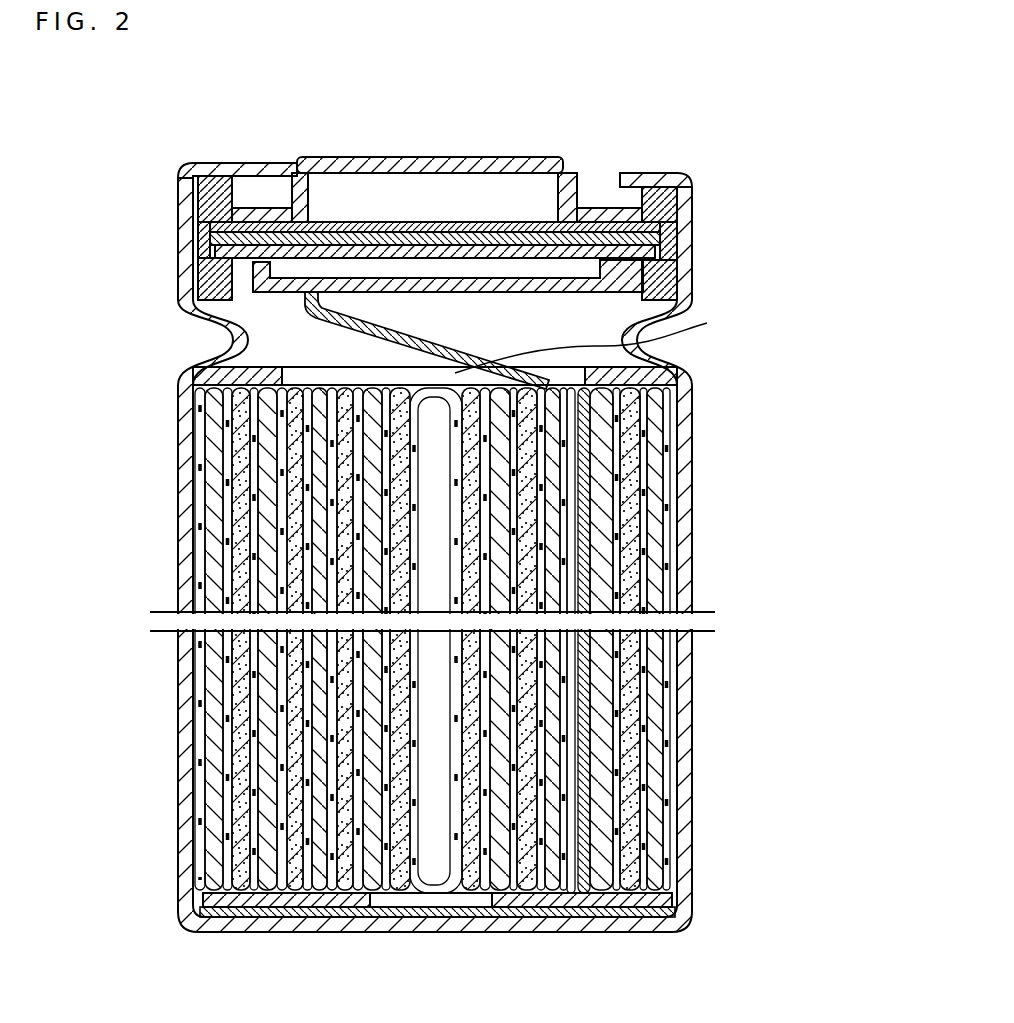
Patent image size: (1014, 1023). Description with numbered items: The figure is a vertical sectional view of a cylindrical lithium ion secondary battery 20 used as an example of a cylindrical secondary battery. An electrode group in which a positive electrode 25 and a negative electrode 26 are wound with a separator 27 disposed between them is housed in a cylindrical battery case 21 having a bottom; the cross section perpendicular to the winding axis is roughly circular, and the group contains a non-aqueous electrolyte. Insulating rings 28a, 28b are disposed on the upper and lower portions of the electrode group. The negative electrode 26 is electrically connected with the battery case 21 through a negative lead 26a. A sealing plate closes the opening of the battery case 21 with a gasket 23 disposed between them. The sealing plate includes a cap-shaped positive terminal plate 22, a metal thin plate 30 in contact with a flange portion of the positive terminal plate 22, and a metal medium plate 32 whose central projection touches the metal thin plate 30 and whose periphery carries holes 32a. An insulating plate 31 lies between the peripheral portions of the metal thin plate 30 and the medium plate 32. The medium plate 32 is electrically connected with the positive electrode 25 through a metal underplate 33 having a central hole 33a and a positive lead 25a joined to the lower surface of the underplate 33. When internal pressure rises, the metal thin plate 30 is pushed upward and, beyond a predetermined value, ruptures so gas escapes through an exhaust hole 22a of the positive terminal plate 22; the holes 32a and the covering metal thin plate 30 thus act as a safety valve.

The cylindrical lithium ion secondary battery 20 is at (216, 130).
The battery case 21 is at (178, 525).
The positive terminal plate 22 is at (357, 157).
The exhaust hole 22a is at (560, 172).
The gasket 23 is at (660, 233).
The positive electrode 25 is at (655, 724).
The positive lead 25a is at (615, 341).
The negative electrode 26 is at (665, 668).
The negative lead 26a is at (486, 917).
The separator 27 is at (672, 576).
The insulating ring 28a is at (687, 381).
The insulating ring 28b is at (688, 905).
The metal thin plate 30 is at (622, 203).
The insulating plate 31 is at (665, 266).
The medium plate 32 is at (196, 243).
The holes 32a is at (352, 238).
The underplate 33 is at (198, 290).
The hole 33a is at (410, 293).